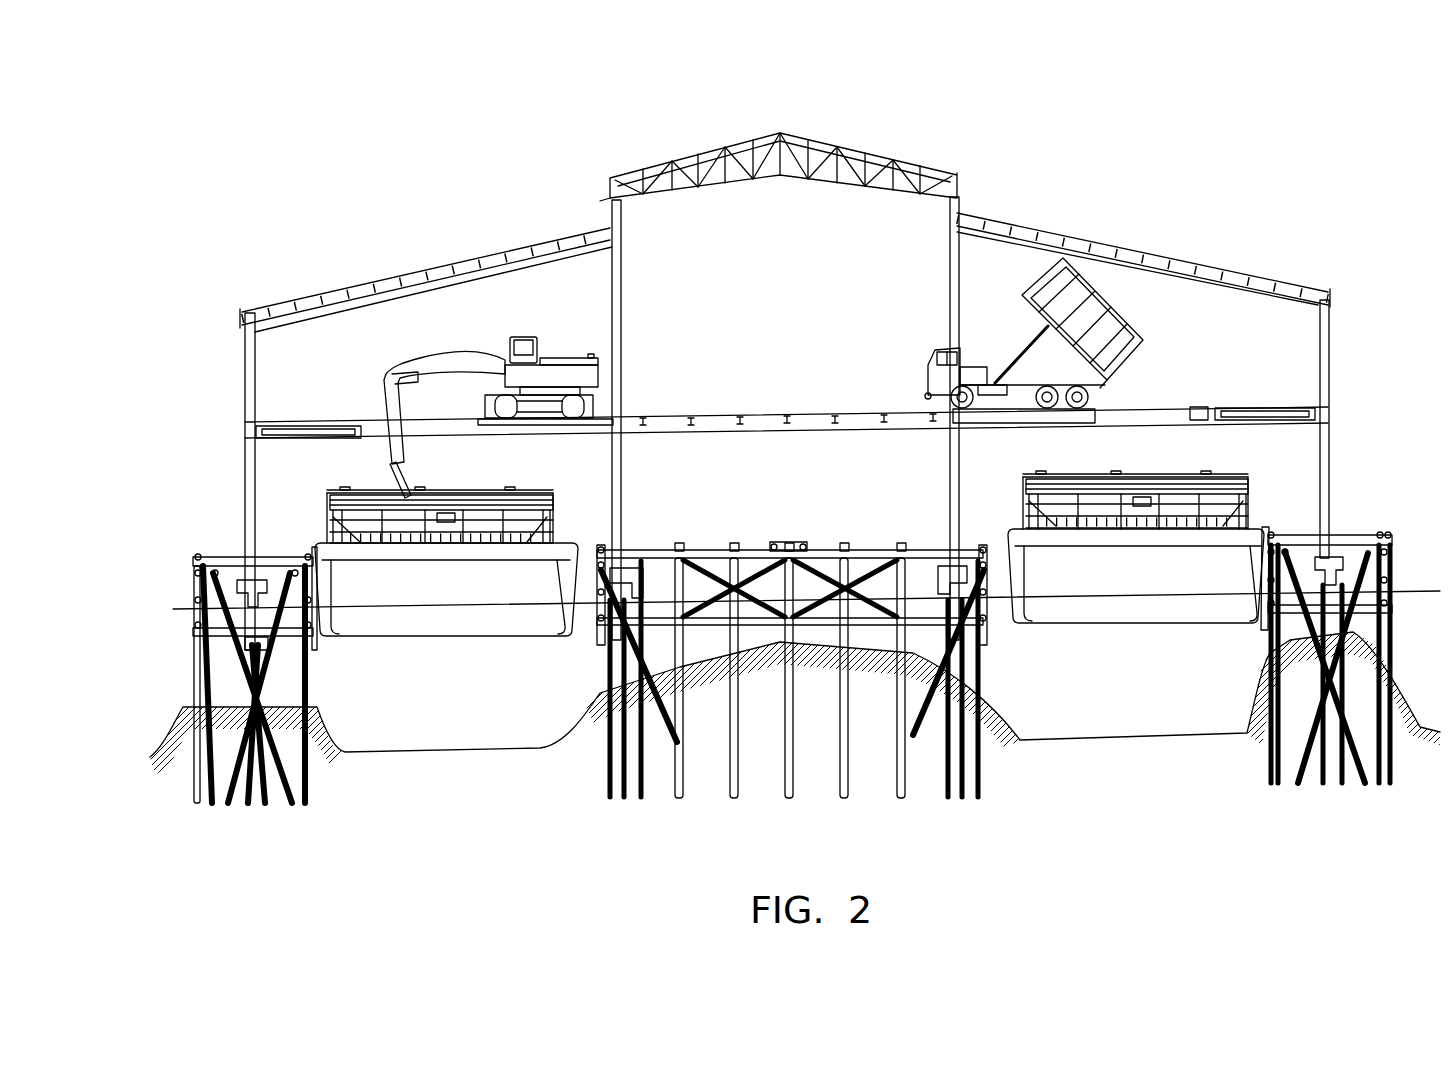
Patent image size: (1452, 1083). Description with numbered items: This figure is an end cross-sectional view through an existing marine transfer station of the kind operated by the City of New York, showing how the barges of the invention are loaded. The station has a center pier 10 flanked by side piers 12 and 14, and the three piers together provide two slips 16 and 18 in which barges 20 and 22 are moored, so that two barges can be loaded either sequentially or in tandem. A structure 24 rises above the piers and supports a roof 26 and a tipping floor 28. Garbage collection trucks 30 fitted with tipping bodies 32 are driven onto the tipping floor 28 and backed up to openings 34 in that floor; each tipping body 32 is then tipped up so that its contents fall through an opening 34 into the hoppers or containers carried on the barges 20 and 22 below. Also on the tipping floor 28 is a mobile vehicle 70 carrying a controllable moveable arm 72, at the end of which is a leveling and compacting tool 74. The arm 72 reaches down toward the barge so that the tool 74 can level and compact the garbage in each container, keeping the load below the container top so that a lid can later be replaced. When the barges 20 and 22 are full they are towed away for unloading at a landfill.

The center pier 10 is at (827, 546).
The side pier 12 is at (231, 553).
The side pier 14 is at (1351, 533).
The slip 16 is at (587, 580).
The slip 18 is at (988, 586).
The barge 20 is at (430, 620).
The barge 22 is at (1150, 605).
The structure 24 is at (1332, 349).
The roof 26 is at (850, 143).
The tipping floor 28 is at (750, 413).
The garbage collection truck 30 is at (928, 357).
The tipping body 32 is at (1113, 305).
The opening 34 is at (477, 425).
The mobile vehicle 70 is at (567, 360).
The controllable moveable arm 72 is at (417, 378).
The leveling and compacting tool 74 is at (388, 472).